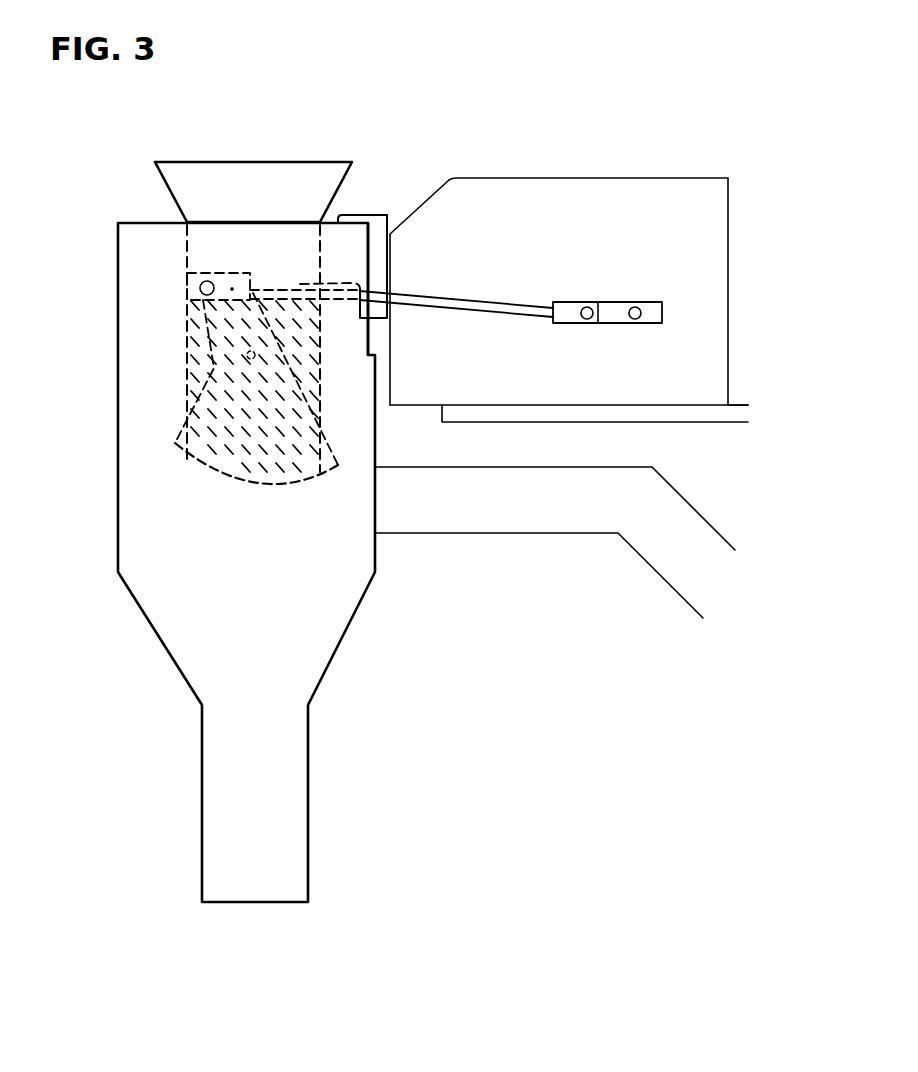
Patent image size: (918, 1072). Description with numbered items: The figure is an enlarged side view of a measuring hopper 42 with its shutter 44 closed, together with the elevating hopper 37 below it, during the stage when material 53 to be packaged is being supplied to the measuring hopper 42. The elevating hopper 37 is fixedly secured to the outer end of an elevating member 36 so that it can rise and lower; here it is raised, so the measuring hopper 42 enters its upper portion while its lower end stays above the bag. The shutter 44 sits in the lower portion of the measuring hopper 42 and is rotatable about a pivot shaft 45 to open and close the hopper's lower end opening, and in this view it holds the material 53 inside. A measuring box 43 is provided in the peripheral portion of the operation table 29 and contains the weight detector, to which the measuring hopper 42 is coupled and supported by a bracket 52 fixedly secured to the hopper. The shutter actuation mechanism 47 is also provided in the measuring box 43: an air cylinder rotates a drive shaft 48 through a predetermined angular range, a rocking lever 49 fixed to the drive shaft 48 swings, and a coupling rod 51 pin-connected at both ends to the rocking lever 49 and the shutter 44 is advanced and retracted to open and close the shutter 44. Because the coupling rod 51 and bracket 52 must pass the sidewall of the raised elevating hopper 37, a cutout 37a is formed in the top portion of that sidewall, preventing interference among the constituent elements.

The operation table 29 is at (703, 415).
The elevating member 36 is at (540, 518).
The elevating hopper 37 is at (133, 502).
The cutout 37a is at (372, 250).
The measuring hopper 42 is at (235, 178).
The measuring box 43 is at (648, 195).
The shutter 44 is at (257, 485).
The pivot shaft 45 is at (245, 355).
The shutter actuation mechanism 47 is at (558, 262).
The drive shaft 48 is at (635, 320).
The rocking lever 49 is at (611, 306).
The coupling rod 51 is at (455, 307).
The bracket 52 is at (375, 220).
The material 53 is at (190, 400).